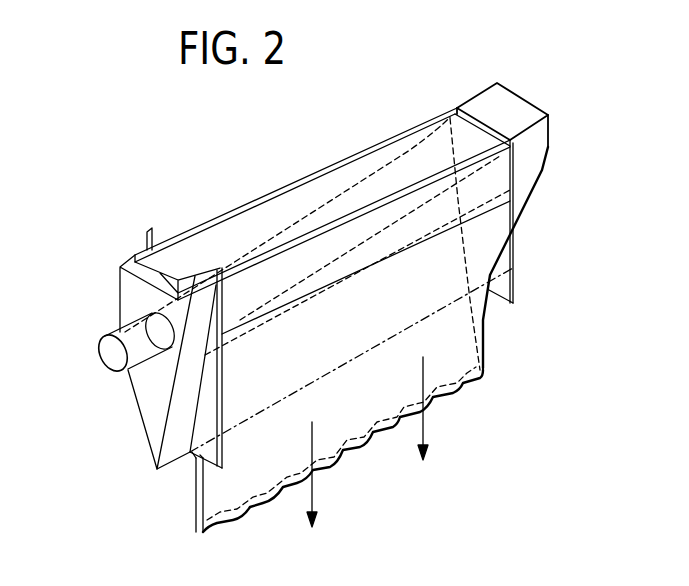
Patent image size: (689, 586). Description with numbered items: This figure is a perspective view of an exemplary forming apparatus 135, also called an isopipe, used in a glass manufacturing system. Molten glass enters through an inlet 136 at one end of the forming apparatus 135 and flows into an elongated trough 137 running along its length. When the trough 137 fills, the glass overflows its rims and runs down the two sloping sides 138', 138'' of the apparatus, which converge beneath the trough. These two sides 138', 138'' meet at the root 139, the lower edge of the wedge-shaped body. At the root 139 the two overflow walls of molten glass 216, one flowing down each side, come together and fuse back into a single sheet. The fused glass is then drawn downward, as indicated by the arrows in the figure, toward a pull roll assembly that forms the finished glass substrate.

The forming apparatus 135 is at (566, 83).
The inlet 136 is at (114, 355).
The trough 137 is at (410, 200).
The side 138' is at (129, 372).
The side 138'' is at (138, 368).
The root 139 is at (287, 397).
The overflow walls of molten glass 216 is at (196, 508).